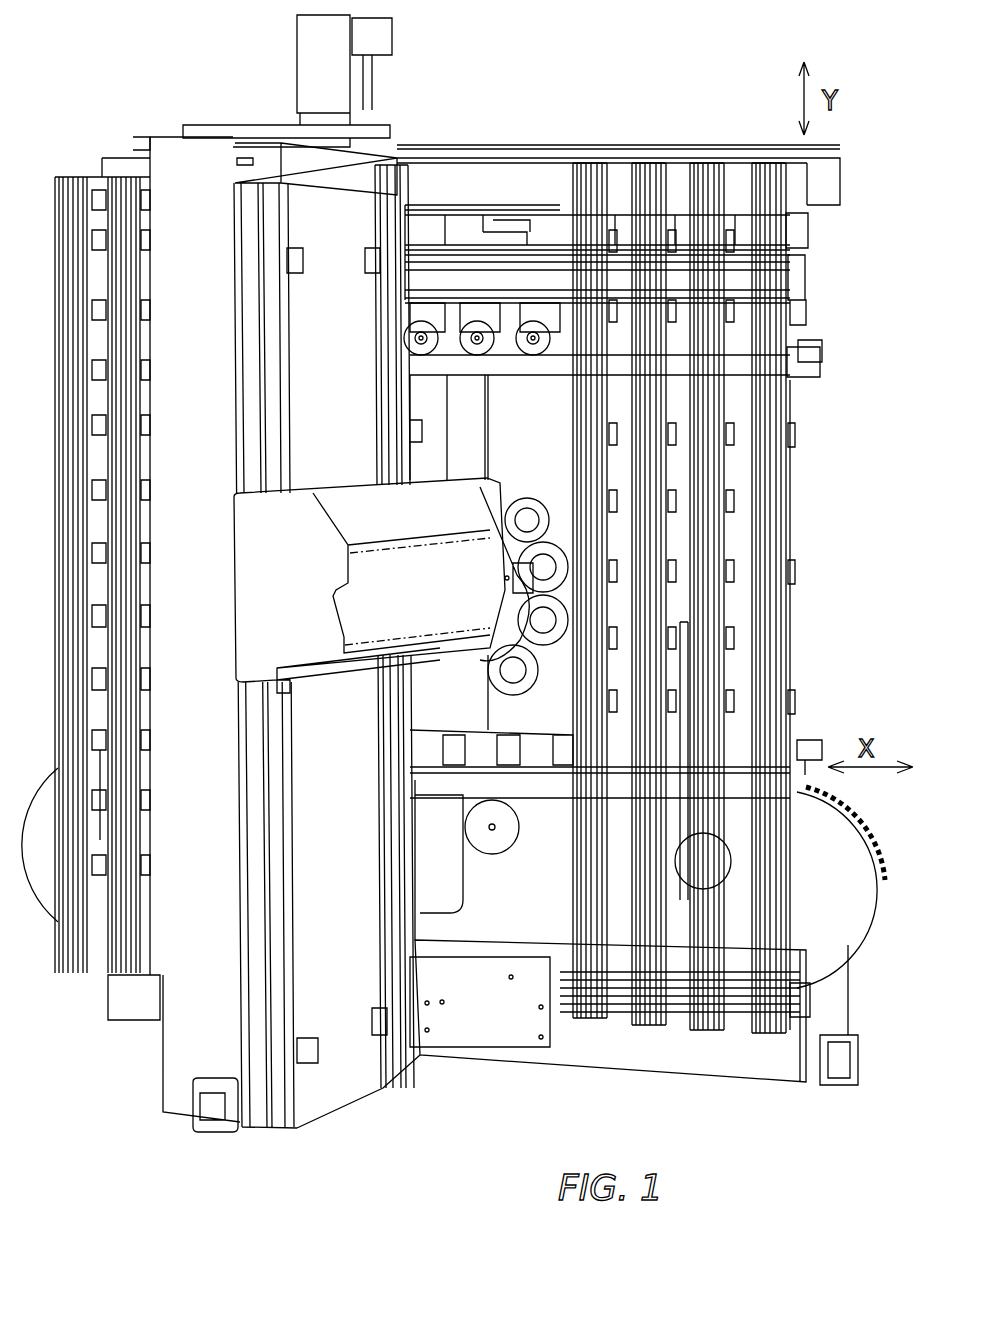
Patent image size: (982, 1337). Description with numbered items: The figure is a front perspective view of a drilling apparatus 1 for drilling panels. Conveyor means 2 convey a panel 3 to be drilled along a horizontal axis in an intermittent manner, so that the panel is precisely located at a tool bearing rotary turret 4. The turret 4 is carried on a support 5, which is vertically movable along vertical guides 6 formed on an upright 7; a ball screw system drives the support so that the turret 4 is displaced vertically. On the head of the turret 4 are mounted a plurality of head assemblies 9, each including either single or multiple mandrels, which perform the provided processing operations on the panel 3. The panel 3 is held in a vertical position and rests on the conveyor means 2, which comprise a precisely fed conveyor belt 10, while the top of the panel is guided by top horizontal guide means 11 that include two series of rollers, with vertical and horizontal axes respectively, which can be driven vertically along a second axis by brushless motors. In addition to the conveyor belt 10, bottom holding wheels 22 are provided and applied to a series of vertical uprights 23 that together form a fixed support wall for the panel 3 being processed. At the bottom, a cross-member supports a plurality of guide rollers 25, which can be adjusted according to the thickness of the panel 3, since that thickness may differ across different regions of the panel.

The drilling apparatus 1 is at (651, 110).
The conveyor means 2 is at (52, 887).
The panel 3 is at (546, 452).
The tool bearing rotary turret 4 is at (440, 665).
The support 5 is at (348, 507).
The vertical guides 6 is at (283, 1092).
The upright 7 is at (180, 1007).
The head assemblies 9 is at (526, 498).
The conveyor belt 10 is at (852, 814).
The top horizontal guide means 11 is at (821, 334).
The bottom holding wheels 22 is at (796, 570).
The vertical uprights 23 is at (704, 465).
The guide rollers 25 is at (803, 745).